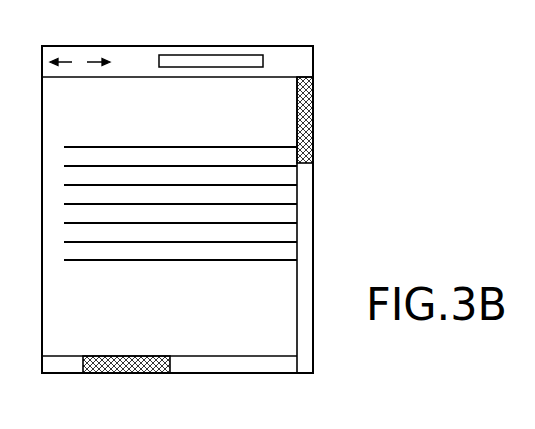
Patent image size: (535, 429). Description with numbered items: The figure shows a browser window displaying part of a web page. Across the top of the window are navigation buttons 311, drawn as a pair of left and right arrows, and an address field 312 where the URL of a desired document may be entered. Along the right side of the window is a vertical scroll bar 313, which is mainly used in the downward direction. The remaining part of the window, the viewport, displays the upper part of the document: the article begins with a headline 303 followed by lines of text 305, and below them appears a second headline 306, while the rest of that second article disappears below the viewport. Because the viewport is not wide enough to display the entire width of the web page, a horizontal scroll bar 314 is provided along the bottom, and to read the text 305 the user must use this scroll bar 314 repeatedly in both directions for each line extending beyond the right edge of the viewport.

The navigation buttons 311 is at (88, 55).
The address field 312 is at (222, 57).
The headline 303 is at (163, 108).
The text 305 is at (268, 158).
The vertical scroll bar 313 is at (312, 120).
The second headline 306 is at (163, 334).
The horizontal scroll bar 314 is at (121, 366).